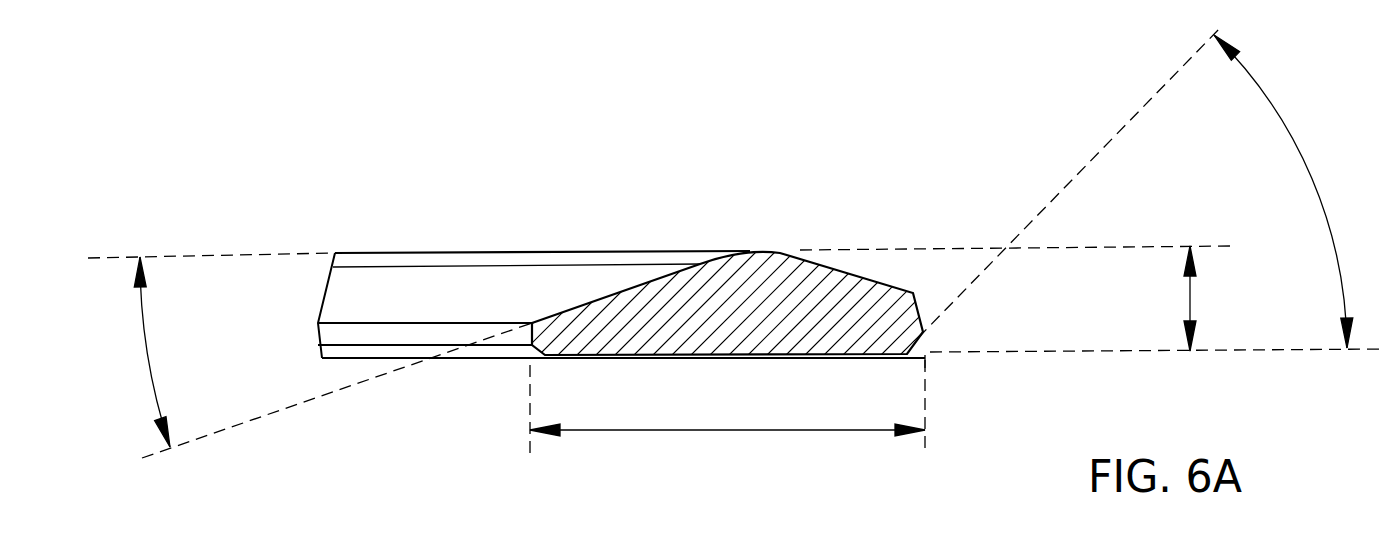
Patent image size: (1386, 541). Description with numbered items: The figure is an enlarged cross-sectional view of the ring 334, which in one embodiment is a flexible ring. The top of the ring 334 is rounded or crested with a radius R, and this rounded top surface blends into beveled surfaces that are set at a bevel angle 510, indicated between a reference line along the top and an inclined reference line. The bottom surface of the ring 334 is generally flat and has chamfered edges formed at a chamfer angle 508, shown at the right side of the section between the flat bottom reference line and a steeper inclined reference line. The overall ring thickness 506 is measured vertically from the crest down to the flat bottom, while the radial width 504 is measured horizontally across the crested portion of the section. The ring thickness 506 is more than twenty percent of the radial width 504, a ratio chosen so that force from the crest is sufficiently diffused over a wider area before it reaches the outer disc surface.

The ring 334 is at (543, 197).
The radial width 504 is at (708, 431).
The ring thickness 506 is at (1190, 298).
The chamfer angle 508 is at (1278, 110).
The bevel angle 510 is at (145, 343).
The radius R is at (747, 248).